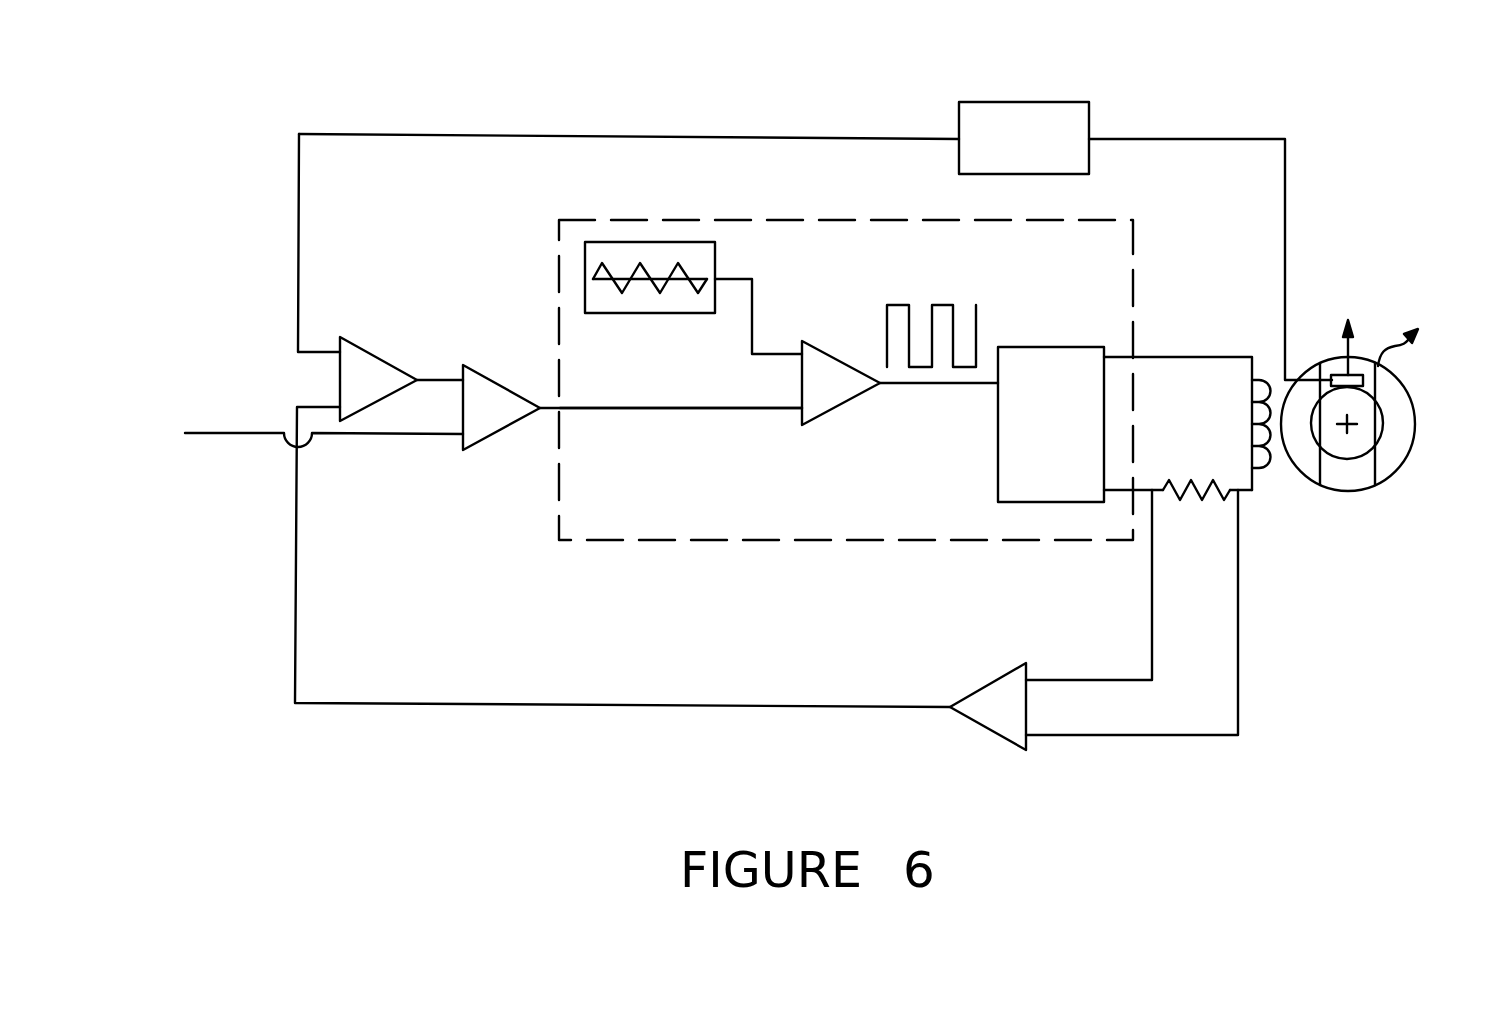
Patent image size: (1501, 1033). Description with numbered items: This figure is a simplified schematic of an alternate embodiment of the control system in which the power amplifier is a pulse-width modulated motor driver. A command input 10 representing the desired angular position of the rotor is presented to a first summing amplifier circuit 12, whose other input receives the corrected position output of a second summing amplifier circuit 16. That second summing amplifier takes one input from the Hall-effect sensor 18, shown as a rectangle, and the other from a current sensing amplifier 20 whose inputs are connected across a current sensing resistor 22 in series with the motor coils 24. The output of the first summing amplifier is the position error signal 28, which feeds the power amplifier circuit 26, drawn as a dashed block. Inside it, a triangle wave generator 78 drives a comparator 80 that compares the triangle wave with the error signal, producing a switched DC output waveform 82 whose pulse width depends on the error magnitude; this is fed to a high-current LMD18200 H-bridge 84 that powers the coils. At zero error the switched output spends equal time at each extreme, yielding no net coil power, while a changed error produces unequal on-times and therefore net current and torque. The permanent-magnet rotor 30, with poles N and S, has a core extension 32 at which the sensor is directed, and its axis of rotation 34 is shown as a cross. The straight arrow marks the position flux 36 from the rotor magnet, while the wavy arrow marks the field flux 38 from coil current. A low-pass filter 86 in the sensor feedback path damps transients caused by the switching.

The input 10 is at (237, 433).
The first summing amplifier circuit 12 is at (495, 381).
The second summing amplifier circuit 16 is at (362, 348).
The Hall-effect sensor 18 is at (1337, 376).
The current sensing amplifier 20 is at (992, 730).
The current sensing resistor 22 is at (1216, 481).
The motor coils 24 is at (1260, 422).
The power amplifier circuit 26 is at (905, 222).
The position error signal 28 is at (647, 406).
The permanent-magnet rotor 30 is at (1348, 442).
The core extension 32 is at (1368, 404).
The axis of rotation 34 is at (1352, 430).
The position flux 36 is at (1351, 332).
The field flux 38 is at (1413, 333).
The triangle wave generator 78 is at (678, 313).
The comparator 80 is at (832, 352).
The switched DC output waveform 82 is at (952, 305).
The LMD18200 H-bridge 84 is at (1078, 347).
The low-pass filter 86 is at (998, 102).